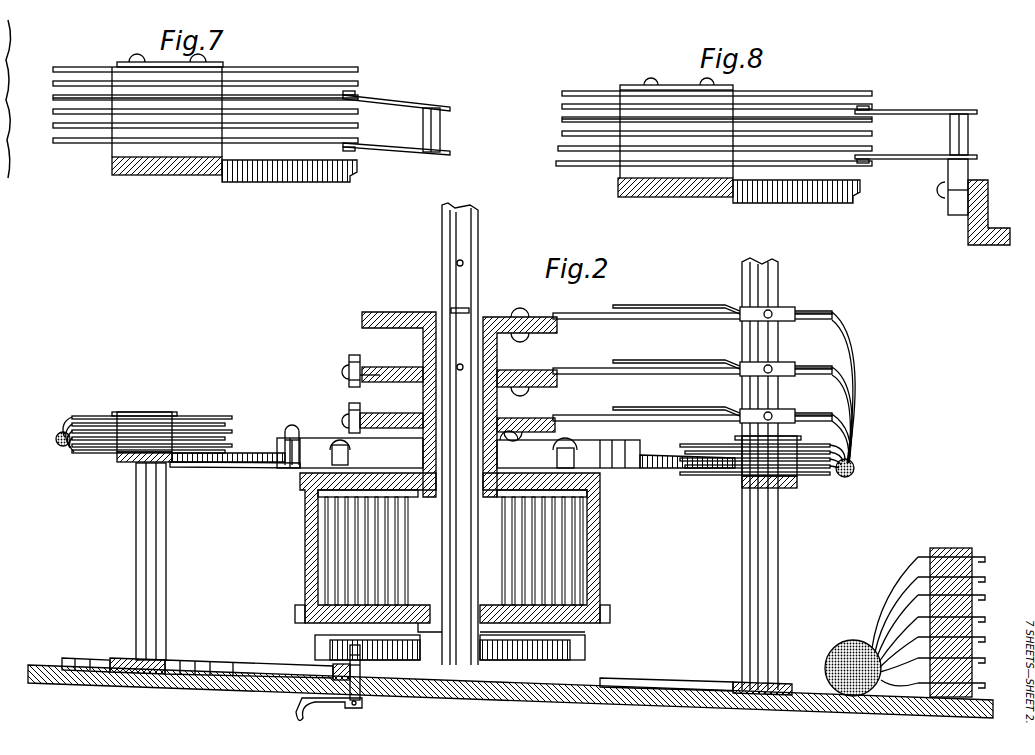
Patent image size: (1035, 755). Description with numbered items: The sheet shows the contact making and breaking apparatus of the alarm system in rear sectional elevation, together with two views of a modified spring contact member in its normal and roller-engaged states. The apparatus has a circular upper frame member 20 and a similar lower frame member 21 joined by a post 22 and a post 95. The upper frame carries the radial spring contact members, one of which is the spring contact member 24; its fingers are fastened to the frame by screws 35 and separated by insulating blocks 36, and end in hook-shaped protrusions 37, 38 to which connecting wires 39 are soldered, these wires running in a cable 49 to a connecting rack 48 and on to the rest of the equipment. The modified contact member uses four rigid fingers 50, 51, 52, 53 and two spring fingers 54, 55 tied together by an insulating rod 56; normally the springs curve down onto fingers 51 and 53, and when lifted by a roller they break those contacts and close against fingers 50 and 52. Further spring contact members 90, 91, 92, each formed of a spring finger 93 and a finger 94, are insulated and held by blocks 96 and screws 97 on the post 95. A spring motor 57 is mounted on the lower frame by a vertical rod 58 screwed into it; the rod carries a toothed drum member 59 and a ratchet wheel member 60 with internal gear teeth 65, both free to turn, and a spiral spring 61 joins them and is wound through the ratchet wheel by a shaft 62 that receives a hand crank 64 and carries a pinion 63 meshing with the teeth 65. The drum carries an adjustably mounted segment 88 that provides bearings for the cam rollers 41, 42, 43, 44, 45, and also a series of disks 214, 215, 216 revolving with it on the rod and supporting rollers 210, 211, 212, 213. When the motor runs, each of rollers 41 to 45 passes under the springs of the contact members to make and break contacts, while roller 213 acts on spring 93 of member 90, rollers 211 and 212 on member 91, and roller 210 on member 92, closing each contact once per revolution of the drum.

In FIG. 7, the upper frame member 20 is at (158, 168).
In FIG. 8, the upper frame member 20 is at (655, 183).
In FIG. 2, the upper frame member 20 is at (172, 460).
In FIG. 2, the lower frame member 21 is at (172, 662).
In FIG. 2, the post 22 is at (165, 562).
In FIG. 2, the spring contact member 24 is at (143, 408).
In FIG. 7, the screws 35 is at (150, 58).
In FIG. 8, the screws 35 is at (710, 80).
In FIG. 7, the insulating blocks 36 is at (205, 140).
In FIG. 8, the insulating blocks 36 is at (710, 165).
In FIG. 7, the hook-shaped protrusion 37 is at (82, 158).
In FIG. 8, the hook-shaped protrusion 37 is at (560, 135).
In FIG. 7, the hook-shaped protrusion 38 is at (90, 142).
In FIG. 8, the hook-shaped protrusion 38 is at (570, 165).
In FIG. 2, the connecting wires 39 is at (72, 430).
In FIG. 2, the cam roller 41 is at (572, 442).
In FIG. 2, the cam roller 42 is at (502, 432).
In FIG. 8, the cam roller 43 is at (968, 170).
In FIG. 2, the cam roller 44 is at (342, 440).
In FIG. 2, the cam roller 45 is at (290, 430).
In FIG. 2, the connecting rack 48 is at (950, 547).
In FIG. 2, the cable 49 is at (62, 445).
In FIG. 7, the rigid finger 50 is at (307, 79).
In FIG. 8, the rigid finger 50 is at (800, 103).
In FIG. 7, the rigid finger 51 is at (315, 100).
In FIG. 8, the rigid finger 51 is at (810, 128).
In FIG. 7, the rigid finger 52 is at (230, 182).
In FIG. 8, the rigid finger 52 is at (782, 180).
In FIG. 7, the rigid finger 53 is at (283, 152).
In FIG. 8, the rigid finger 53 is at (828, 172).
In FIG. 7, the spring finger 54 is at (400, 97).
In FIG. 8, the spring finger 54 is at (915, 110).
In FIG. 7, the spring finger 55 is at (418, 154).
In FIG. 8, the spring finger 55 is at (915, 158).
In FIG. 7, the insulating rod 56 is at (441, 126).
In FIG. 8, the insulating rod 56 is at (968, 128).
In FIG. 2, the motor 57 is at (305, 560).
In FIG. 2, the vertical rod 58 is at (462, 244).
In FIG. 2, the toothed drum member 59 is at (310, 500).
In FIG. 2, the ratchet wheel member 60 is at (428, 537).
In FIG. 2, the spiral spring 61 is at (325, 538).
In FIG. 2, the shaft 62 is at (370, 690).
In FIG. 2, the pinion 63 is at (376, 650).
In FIG. 2, the hand crank 64 is at (336, 702).
In FIG. 2, the internal gear teeth 65 is at (535, 668).
In FIG. 8, the segment 88 is at (968, 236).
In FIG. 2, the segment 88 is at (296, 465).
In FIG. 2, the spring contact member 90 is at (847, 416).
In FIG. 2, the spring contact member 91 is at (850, 385).
In FIG. 2, the spring contact member 92 is at (840, 316).
In FIG. 2, the spring finger 93 is at (712, 320).
In FIG. 2, the finger 94 is at (678, 305).
In FIG. 2, the post 95 is at (780, 282).
In FIG. 2, the insulating blocks 96 is at (785, 308).
In FIG. 2, the screws 97 is at (762, 308).
In FIG. 2, the roller 210 is at (516, 315).
In FIG. 2, the roller 211 is at (527, 366).
In FIG. 2, the roller 212 is at (354, 362).
In FIG. 2, the roller 213 is at (352, 408).
In FIG. 2, the disk 214 is at (392, 418).
In FIG. 2, the disk 215 is at (393, 370).
In FIG. 2, the disk 216 is at (386, 315).